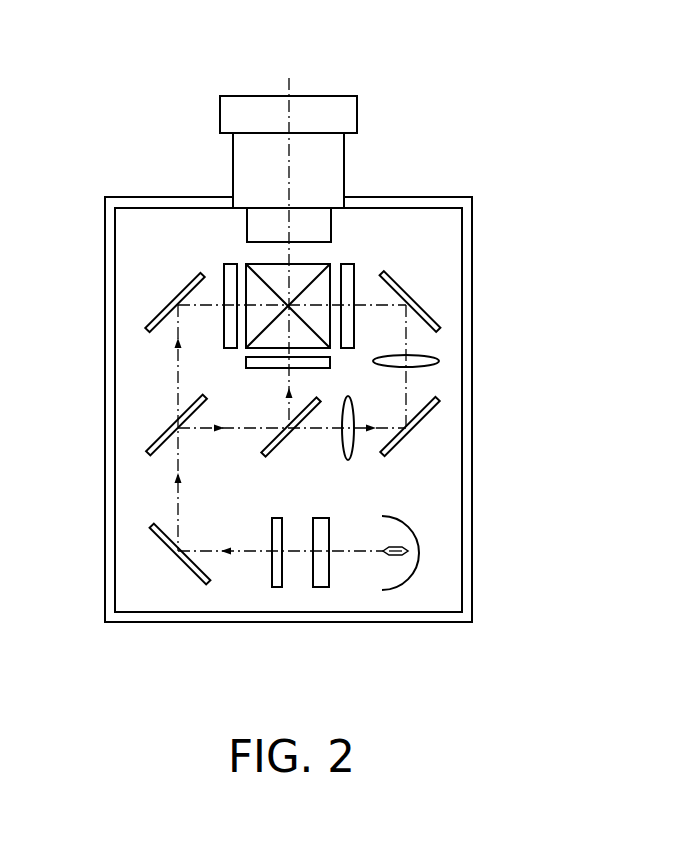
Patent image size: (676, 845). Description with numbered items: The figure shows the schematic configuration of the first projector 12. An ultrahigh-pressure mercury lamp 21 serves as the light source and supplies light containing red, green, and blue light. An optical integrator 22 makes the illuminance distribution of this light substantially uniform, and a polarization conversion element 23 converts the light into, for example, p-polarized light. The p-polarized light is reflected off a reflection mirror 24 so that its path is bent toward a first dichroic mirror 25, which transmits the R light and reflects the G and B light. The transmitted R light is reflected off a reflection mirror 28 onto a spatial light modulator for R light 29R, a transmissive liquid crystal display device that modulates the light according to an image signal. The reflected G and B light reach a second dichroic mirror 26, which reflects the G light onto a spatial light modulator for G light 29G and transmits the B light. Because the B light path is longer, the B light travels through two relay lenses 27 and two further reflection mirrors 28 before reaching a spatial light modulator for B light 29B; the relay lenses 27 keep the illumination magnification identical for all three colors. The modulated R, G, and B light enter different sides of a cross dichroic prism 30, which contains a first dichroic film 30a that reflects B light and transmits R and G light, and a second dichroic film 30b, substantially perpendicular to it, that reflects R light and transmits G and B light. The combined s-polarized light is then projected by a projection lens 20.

The first projector 12 is at (111, 104).
The projection lens 20 is at (350, 112).
The ultrahigh-pressure mercury lamp 21 is at (422, 542).
The optical integrator 22 is at (319, 587).
The polarization conversion element 23 is at (274, 587).
The reflection mirror 24 is at (183, 563).
The first dichroic mirror 25 is at (162, 446).
The second dichroic mirror 26 is at (290, 457).
The relay lens 27 is at (439, 360).
The reflection mirror 28 is at (158, 320).
The spatial light modulator for R light 29R is at (228, 262).
The spatial light modulator for G light 29G is at (263, 370).
The spatial light modulator for B light 29B is at (344, 264).
The cross dichroic prism 30 is at (268, 266).
The first dichroic film 30a is at (232, 282).
The second dichroic film 30b is at (352, 277).